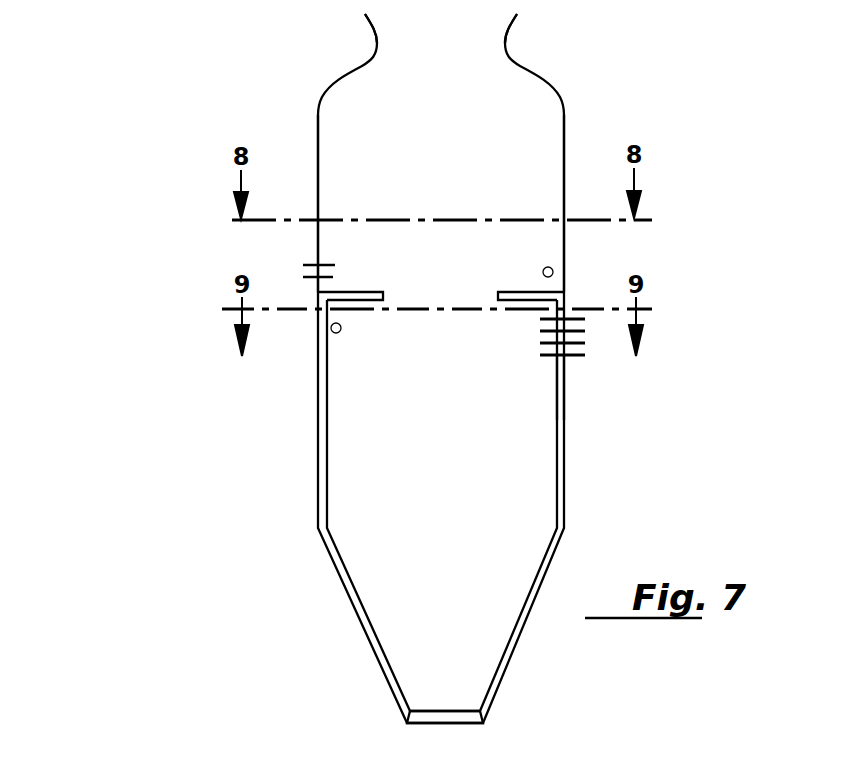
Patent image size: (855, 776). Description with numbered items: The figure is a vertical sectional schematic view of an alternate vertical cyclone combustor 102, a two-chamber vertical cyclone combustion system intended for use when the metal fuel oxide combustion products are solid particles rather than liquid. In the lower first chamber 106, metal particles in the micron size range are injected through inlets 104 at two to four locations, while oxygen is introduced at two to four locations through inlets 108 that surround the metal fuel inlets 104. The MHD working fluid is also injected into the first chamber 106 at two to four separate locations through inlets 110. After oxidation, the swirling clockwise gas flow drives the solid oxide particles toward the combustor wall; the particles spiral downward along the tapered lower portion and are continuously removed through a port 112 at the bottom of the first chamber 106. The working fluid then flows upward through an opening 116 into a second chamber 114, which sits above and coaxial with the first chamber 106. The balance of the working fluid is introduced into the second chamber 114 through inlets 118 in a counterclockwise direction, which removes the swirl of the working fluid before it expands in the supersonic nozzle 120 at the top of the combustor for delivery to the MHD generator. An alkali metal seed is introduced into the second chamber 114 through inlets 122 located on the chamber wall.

The vertical cyclone combustor 102 is at (582, 146).
The metal fuel inlets 104 is at (580, 334).
The first chamber 106 is at (465, 489).
The oxygen inlets 108 is at (578, 357).
The working fluid inlets 110 is at (341, 332).
The port 112 is at (462, 718).
The second chamber 114 is at (450, 186).
The opening 116 is at (384, 296).
The second chamber inlets 118 is at (553, 268).
The supersonic nozzle 120 is at (378, 50).
The seed inlets 122 is at (312, 263).